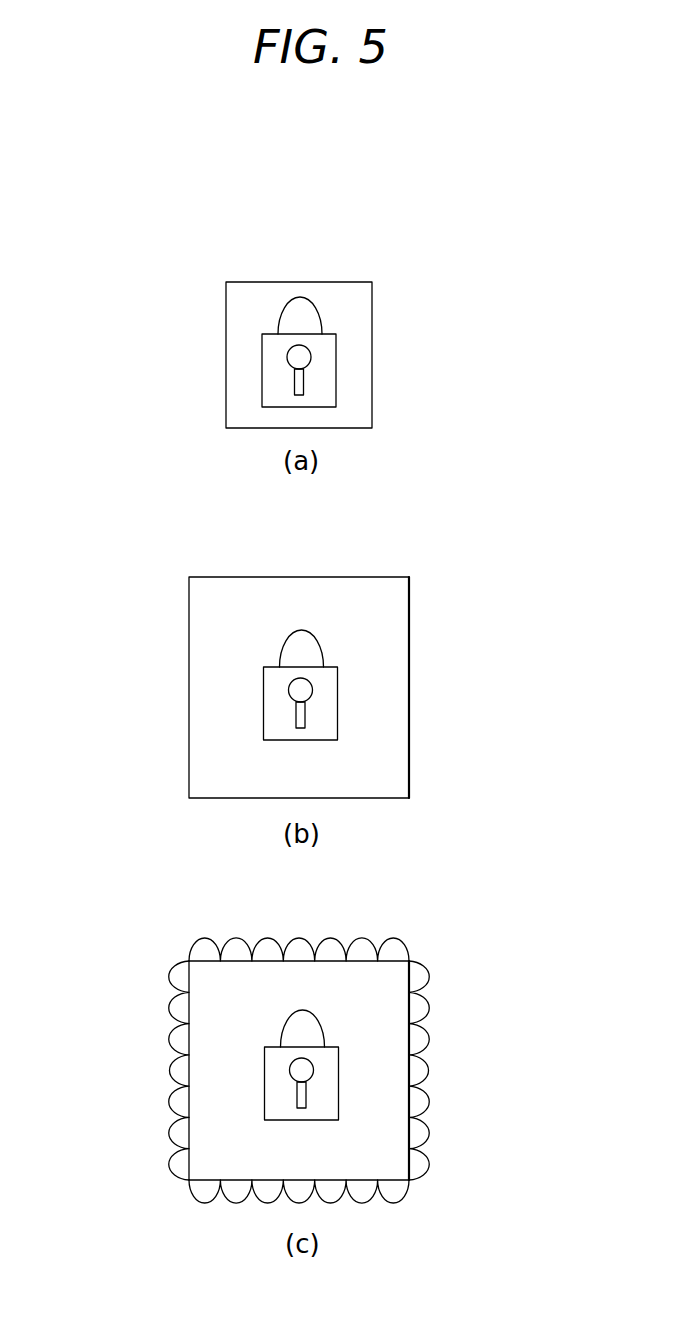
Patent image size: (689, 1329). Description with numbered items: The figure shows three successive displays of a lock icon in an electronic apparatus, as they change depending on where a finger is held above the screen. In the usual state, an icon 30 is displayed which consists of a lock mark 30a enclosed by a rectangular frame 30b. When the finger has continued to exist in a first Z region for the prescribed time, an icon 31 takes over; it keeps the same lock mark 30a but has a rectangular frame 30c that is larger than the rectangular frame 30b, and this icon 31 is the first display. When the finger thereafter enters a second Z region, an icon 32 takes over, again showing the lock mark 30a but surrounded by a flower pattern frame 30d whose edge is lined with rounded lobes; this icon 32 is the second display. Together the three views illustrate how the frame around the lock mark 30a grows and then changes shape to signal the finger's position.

The icon 30 is at (354, 658).
The lock mark 30a is at (337, 353).
The rectangular frame 30b is at (243, 282).
The rectangular frame 30c is at (189, 725).
The flower pattern frame 30d is at (168, 1102).
The icon 31 is at (307, 687).
The icon 32 is at (310, 1070).